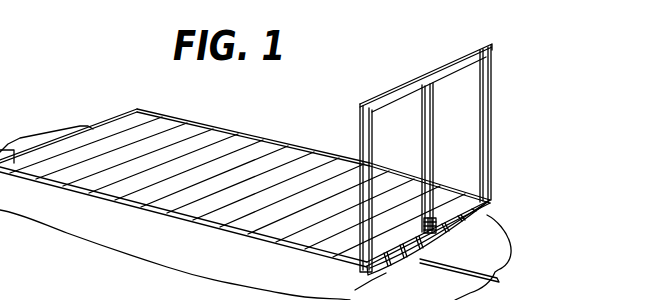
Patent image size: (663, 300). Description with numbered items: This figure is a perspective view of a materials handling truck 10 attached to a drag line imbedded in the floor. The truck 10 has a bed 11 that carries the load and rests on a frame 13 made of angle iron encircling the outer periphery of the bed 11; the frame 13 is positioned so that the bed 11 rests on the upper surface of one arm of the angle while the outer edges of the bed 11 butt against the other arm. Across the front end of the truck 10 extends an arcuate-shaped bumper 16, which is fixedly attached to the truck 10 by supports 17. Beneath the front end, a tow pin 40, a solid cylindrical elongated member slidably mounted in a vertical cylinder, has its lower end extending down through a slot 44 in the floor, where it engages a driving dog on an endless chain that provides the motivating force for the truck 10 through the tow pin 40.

The materials handling truck 10 is at (276, 133).
The bed 11 is at (223, 140).
The frame 13 is at (320, 155).
The arcuate-shaped bumper 16 is at (490, 214).
The supports 17 is at (470, 221).
The tow pin 40 is at (437, 261).
The slot 44 is at (496, 274).